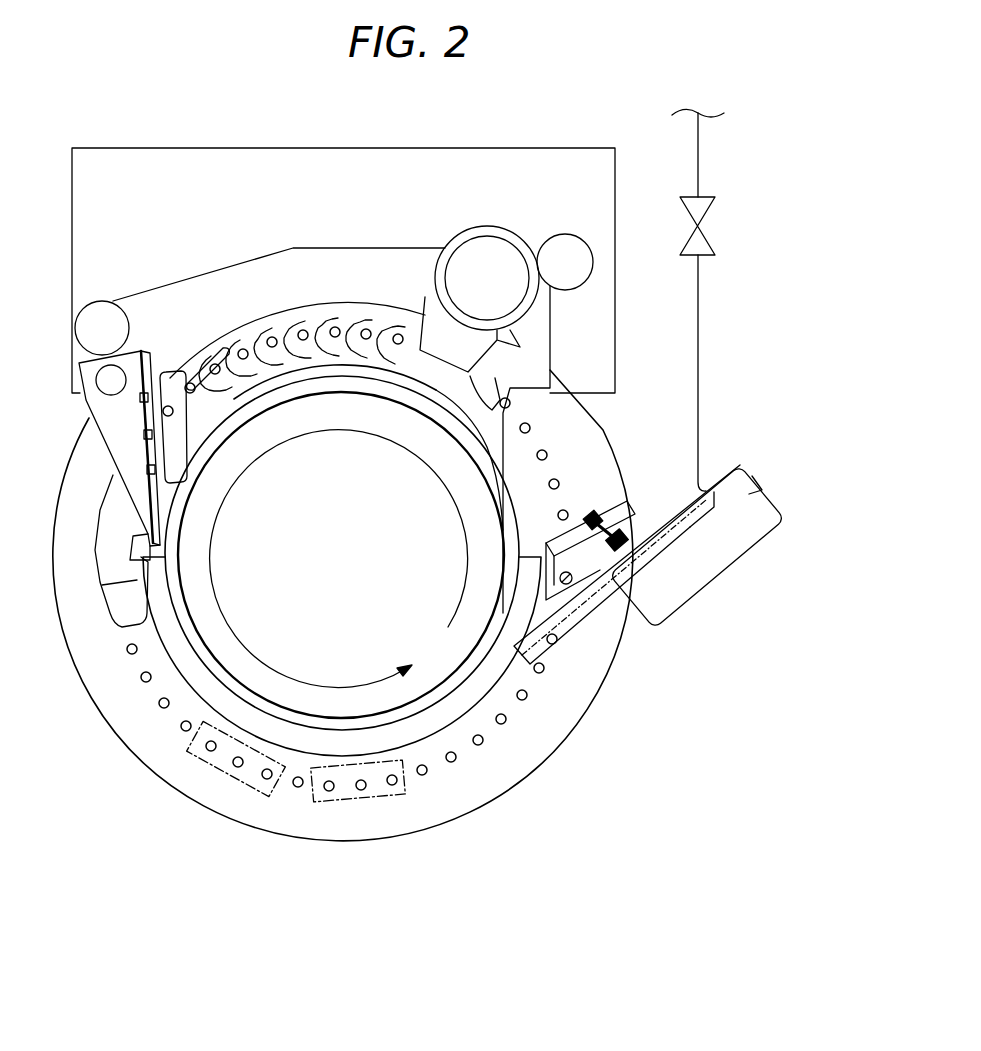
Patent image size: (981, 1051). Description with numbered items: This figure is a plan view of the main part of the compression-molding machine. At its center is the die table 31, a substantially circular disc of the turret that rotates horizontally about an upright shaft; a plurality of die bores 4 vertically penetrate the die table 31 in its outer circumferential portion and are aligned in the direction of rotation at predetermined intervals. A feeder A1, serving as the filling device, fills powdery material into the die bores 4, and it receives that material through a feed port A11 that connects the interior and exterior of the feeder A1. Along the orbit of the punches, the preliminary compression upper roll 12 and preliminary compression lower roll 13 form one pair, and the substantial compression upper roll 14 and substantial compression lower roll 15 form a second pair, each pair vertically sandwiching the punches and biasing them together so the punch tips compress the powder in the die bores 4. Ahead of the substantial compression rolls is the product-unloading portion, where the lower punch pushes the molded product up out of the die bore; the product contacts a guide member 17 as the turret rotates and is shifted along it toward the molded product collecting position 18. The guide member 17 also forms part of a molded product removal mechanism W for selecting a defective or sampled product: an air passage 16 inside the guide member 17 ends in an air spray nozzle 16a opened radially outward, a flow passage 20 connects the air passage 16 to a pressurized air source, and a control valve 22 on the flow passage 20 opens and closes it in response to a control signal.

The die bores 4 is at (143, 682).
The preliminary compression upper roll 12 is at (225, 787).
The preliminary compression lower roll 13 is at (226, 782).
The substantial compression upper roll 14 is at (358, 824).
The substantial compression lower roll 15 is at (360, 800).
The air passage 16 is at (577, 613).
The air spray nozzle 16a is at (556, 645).
The guide member 17 is at (613, 593).
The molded product collecting position 18 is at (752, 553).
The flow passage 20 is at (698, 337).
The control valve 22 is at (698, 228).
The die table 31 is at (452, 822).
The feeder A1 is at (343, 387).
The feed port A11 is at (485, 268).
The molded product removal mechanism W is at (678, 652).